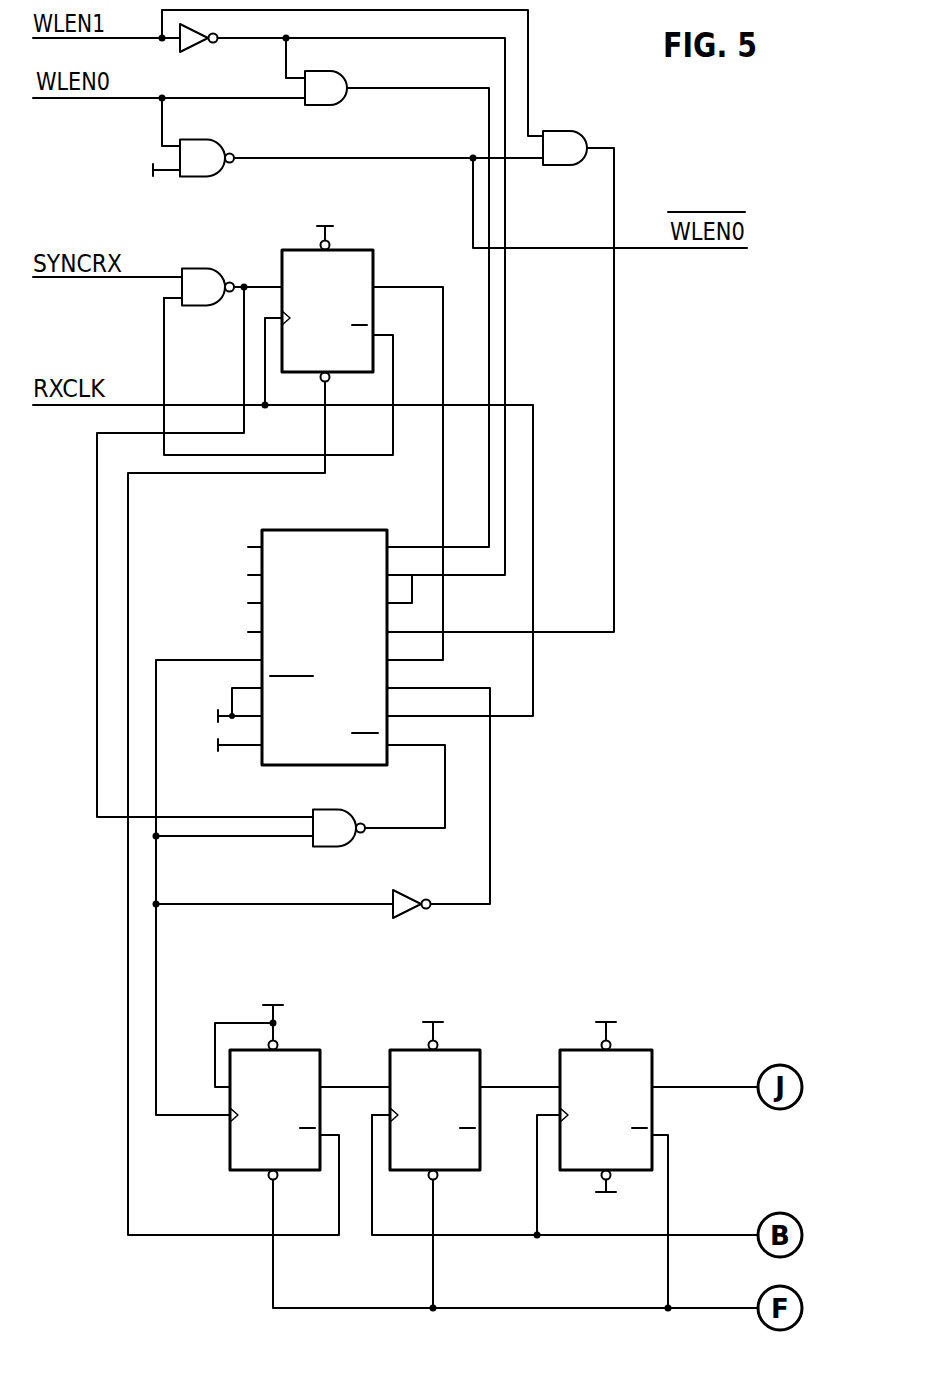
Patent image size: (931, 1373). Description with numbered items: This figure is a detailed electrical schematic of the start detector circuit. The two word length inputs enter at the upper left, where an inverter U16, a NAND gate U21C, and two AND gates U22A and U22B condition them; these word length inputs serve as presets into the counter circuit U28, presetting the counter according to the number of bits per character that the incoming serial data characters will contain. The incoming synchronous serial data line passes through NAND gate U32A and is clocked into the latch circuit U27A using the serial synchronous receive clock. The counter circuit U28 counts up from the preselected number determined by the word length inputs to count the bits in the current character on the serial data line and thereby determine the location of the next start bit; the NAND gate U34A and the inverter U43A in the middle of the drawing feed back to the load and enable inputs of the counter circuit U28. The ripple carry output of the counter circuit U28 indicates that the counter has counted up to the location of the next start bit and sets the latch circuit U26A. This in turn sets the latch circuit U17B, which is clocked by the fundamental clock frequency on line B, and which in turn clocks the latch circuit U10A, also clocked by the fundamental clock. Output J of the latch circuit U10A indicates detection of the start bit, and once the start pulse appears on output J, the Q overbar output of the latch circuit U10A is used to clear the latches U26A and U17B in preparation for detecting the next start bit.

The 74LS04 inverter U16 is at (197, 55).
The 74HCT00 NAND gate U21C is at (218, 156).
The 74HCT08 AND gate U22A is at (377, 87).
The 74HCT08 AND gate U22B is at (593, 149).
The 74HCT00 NAND gate U32A is at (196, 288).
The latch circuit U27A is at (368, 289).
The counter circuit U28 is at (291, 627).
The 74HCT00 NAND gate U34A is at (311, 829).
The 74LS04 inverter U43A is at (446, 904).
The latch circuit U26A is at (254, 1091).
The latch circuit U17B is at (472, 1101).
The latch circuit U10A is at (652, 1108).